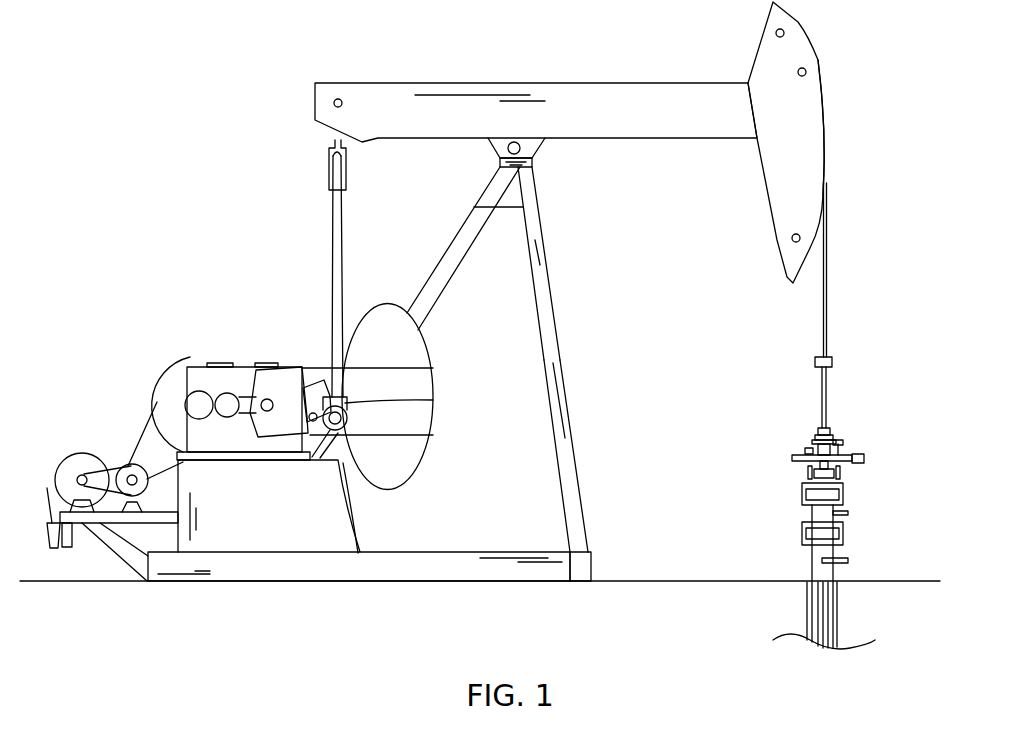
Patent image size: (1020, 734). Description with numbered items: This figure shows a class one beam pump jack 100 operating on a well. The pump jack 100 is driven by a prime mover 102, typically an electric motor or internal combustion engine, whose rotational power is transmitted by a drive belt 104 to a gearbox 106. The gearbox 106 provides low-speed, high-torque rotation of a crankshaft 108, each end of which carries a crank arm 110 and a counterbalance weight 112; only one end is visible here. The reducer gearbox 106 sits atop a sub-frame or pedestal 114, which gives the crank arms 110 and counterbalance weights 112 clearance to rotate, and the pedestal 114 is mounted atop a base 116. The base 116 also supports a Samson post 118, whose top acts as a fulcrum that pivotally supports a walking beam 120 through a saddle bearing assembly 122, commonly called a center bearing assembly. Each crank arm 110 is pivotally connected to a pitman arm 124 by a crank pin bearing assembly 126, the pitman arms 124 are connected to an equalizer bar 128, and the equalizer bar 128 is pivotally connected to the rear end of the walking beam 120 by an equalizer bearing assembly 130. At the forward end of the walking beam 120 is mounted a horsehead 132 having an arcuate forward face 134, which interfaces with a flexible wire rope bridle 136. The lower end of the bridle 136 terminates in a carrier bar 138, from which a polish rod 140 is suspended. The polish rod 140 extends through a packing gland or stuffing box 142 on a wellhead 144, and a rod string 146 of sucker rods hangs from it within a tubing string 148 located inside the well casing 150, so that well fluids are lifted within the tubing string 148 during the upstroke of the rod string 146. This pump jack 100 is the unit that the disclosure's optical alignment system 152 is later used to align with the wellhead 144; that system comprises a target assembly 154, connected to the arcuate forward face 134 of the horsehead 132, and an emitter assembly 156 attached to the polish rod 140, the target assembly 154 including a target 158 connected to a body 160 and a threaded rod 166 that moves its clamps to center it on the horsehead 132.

The beam pump jack 100 is at (168, 187).
The prime mover 102 is at (80, 460).
The drive belt 104 is at (152, 412).
The gearbox 106 is at (205, 373).
The crankshaft 108 is at (272, 408).
The crank arm 110 is at (290, 383).
The counterbalance weight 112 is at (388, 478).
The pedestal 114 is at (232, 535).
The base 116 is at (487, 567).
The Samson post 118 is at (632, 291).
The walking beam 120 is at (622, 90).
The saddle bearing assembly 122 is at (520, 148).
The pitman arm 124 is at (337, 222).
The crank pin bearing assembly 126 is at (433, 400).
The equalizer bar 128 is at (334, 142).
The equalizer bearing assembly 130 is at (334, 102).
The horsehead 132 is at (783, 67).
The arcuate forward face 134 is at (826, 103).
The bridle 136 is at (828, 193).
The carrier bar 138 is at (832, 354).
The polish rod 140 is at (823, 395).
The stuffing box 142 is at (825, 428).
The wellhead 144 is at (843, 490).
The rod string 146 is at (835, 588).
The tubing string 148 is at (813, 600).
The well casing 150 is at (837, 615).
The optical alignment system 152 is at (563, 378).
The target assembly 154 is at (443, 265).
The emitter assembly 156 is at (505, 172).
The target 158 is at (540, 187).
The body 160 is at (574, 540).
The threaded rod 166 is at (358, 553).